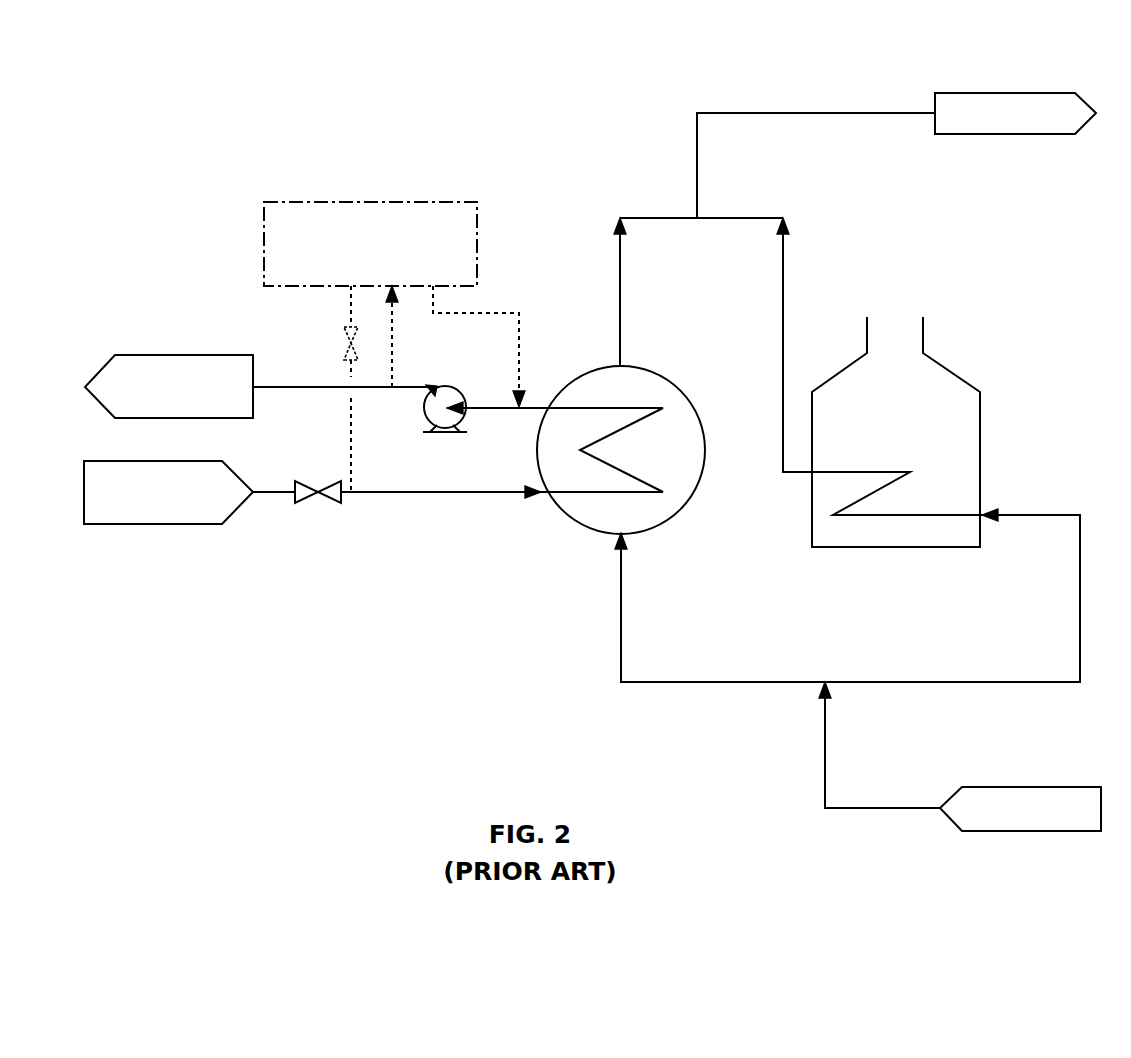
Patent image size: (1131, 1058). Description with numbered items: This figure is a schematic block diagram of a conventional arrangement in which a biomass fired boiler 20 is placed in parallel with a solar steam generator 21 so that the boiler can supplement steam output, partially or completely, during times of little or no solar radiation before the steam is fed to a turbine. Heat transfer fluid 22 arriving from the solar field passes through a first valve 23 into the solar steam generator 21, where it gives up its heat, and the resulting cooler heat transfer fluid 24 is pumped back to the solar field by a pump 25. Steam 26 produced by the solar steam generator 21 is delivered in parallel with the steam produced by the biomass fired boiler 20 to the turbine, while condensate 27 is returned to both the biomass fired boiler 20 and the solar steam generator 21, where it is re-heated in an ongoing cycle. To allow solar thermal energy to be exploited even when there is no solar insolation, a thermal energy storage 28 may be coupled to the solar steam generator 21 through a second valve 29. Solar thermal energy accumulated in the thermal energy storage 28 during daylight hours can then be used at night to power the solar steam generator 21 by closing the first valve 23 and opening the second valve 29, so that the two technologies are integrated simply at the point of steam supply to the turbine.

The biomass fired boiler 20 is at (863, 547).
The solar steam generator 21 is at (577, 520).
The heat transfer fluid 22 is at (182, 525).
The first valve 23 is at (322, 496).
The cooler heat transfer fluid 24 is at (137, 355).
The pump 25 is at (455, 430).
The steam 26 is at (1020, 134).
The condensate 27 is at (1020, 831).
The thermal energy storage 28 is at (355, 203).
The second valve 29 is at (347, 353).